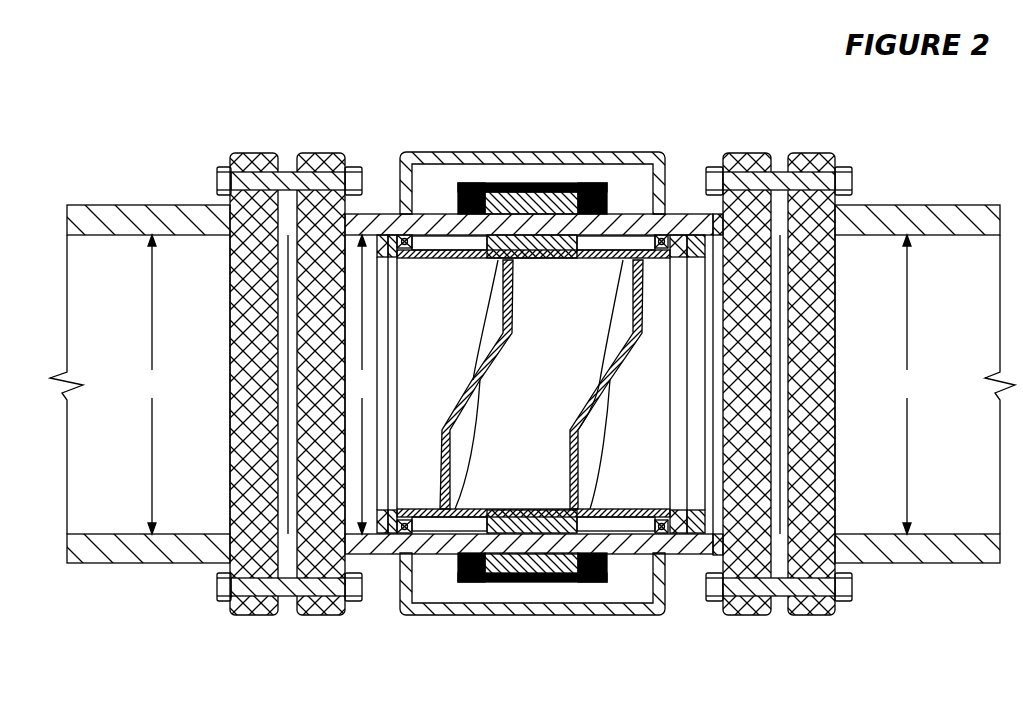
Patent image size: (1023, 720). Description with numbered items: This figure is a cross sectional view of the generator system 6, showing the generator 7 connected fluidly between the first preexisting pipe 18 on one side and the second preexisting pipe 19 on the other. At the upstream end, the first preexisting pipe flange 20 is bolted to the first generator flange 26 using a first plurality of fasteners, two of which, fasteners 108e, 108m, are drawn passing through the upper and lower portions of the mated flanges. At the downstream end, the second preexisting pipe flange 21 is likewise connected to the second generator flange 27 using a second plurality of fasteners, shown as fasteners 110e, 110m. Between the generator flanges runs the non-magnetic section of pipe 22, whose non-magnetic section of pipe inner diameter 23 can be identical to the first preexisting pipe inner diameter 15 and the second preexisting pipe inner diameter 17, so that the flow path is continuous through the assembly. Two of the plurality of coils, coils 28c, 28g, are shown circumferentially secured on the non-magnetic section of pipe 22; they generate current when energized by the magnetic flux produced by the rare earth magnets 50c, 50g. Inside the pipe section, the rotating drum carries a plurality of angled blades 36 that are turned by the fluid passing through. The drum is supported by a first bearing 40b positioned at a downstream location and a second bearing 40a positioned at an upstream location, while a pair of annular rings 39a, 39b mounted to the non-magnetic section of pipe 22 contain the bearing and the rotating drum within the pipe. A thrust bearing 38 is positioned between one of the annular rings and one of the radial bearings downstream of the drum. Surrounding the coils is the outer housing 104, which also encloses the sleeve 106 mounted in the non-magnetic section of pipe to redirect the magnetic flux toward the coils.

The generator system 6 is at (70, 120).
The generator 7 is at (618, 80).
The first preexisting pipe inner diameter 15 is at (152, 384).
The second preexisting pipe inner diameter 17 is at (907, 384).
The first preexisting pipe 18 is at (167, 206).
The second preexisting pipe 19 is at (899, 206).
The first preexisting pipe flange 20 is at (256, 153).
The second preexisting pipe flange 21 is at (832, 153).
The non-magnetic section of pipe 22 is at (632, 205).
The non-magnetic section of pipe inner diameter 23 is at (362, 384).
The first generator flange 26 is at (336, 153).
The second generator flange 27 is at (751, 153).
The coil 28c is at (457, 202).
The coil 28g is at (458, 567).
The angled blades 36 is at (493, 312).
The thrust bearing 38 is at (678, 512).
The annular ring 39a is at (383, 258).
The annular ring 39b is at (690, 260).
The second bearing 40a is at (413, 243).
The first bearing 40b is at (655, 523).
The rare earth magnet 50c is at (520, 238).
The rare earth magnet 50g is at (520, 535).
The outer housing 104 is at (618, 145).
The sleeve 106 is at (553, 183).
The fastener 108e is at (217, 181).
The fastener 108m is at (217, 586).
The fastener 110e is at (851, 181).
The fastener 110m is at (851, 586).